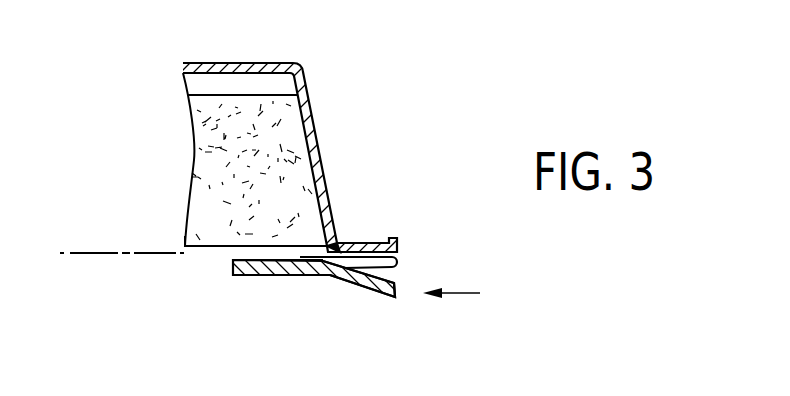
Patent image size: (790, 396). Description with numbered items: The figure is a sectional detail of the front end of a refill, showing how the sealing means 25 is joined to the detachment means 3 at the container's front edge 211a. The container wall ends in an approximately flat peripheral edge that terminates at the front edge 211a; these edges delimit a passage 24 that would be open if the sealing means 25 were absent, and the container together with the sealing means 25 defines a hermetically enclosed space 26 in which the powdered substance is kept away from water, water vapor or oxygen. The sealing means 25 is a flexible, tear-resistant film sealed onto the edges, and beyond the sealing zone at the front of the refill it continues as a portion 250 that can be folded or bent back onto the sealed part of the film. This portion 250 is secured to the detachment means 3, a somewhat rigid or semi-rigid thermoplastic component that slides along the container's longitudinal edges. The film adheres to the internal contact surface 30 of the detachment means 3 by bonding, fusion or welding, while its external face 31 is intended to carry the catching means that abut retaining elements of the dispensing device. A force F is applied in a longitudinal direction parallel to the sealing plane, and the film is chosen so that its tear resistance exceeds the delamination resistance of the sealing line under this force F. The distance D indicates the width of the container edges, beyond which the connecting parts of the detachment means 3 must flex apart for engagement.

The detachment means 3 is at (320, 300).
The passage 24 is at (187, 242).
The sealing means 25 is at (193, 257).
The hermetically enclosed space 26 is at (227, 130).
The internal contact surface 30 is at (264, 277).
The external face 31 is at (353, 292).
The front edge 211a is at (396, 241).
The foldable portion 250 is at (398, 266).
The distance corresponding to the width of the edges D is at (100, 253).
The force F is at (458, 293).